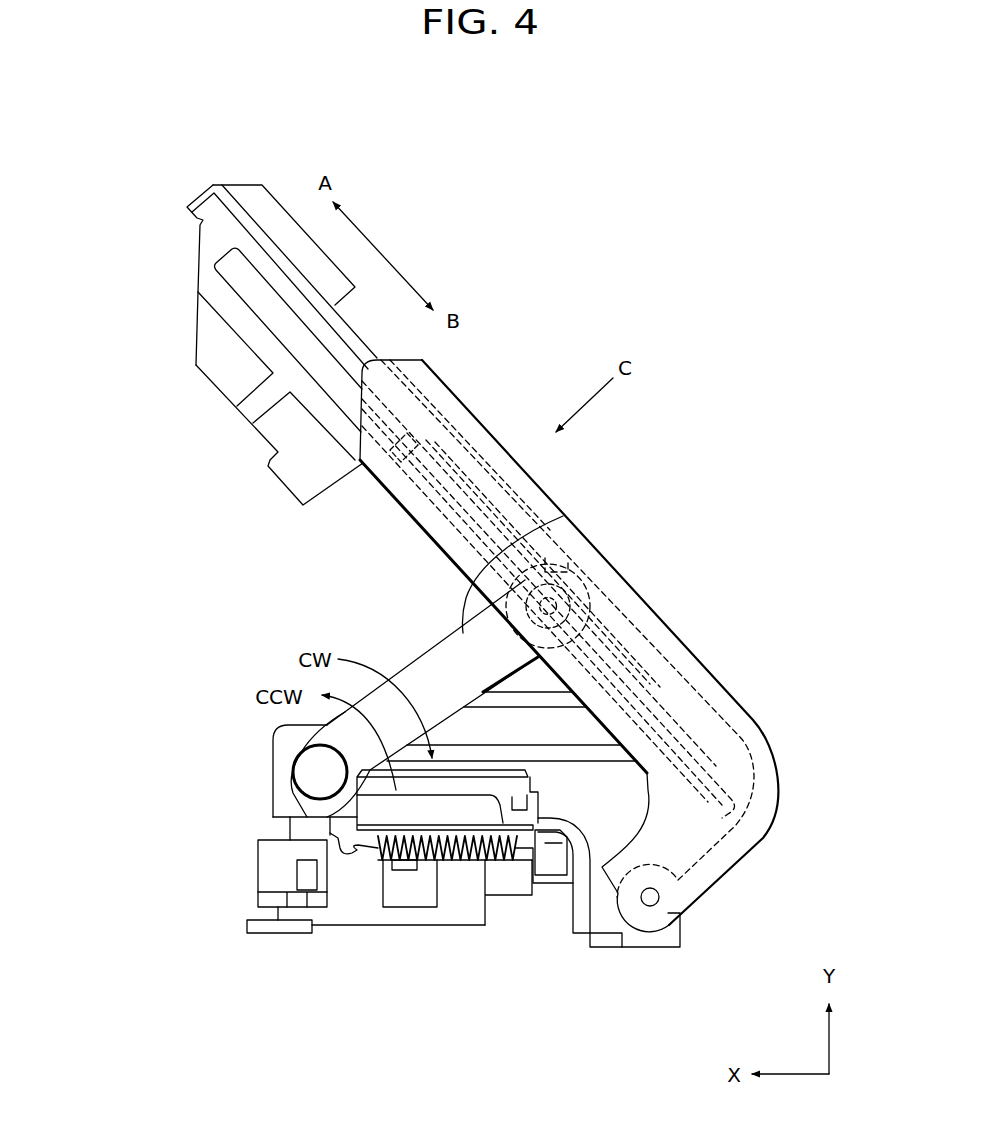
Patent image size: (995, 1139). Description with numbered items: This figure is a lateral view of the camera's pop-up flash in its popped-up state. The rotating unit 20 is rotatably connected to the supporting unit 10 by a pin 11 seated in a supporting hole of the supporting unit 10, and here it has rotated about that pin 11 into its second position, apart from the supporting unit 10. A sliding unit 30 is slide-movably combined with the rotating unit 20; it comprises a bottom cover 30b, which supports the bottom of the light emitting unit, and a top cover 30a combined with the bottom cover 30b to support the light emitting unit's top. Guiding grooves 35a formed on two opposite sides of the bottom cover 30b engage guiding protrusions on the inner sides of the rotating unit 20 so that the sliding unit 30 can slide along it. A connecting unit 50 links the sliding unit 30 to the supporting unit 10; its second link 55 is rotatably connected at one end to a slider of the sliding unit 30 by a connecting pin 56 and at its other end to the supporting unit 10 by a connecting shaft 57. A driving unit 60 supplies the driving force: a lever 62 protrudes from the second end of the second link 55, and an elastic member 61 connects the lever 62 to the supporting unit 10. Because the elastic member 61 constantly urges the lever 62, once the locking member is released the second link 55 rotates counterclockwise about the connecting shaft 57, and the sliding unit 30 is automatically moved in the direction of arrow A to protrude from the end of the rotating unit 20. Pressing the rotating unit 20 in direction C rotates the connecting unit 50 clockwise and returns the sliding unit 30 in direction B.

The supporting unit 10 is at (557, 930).
The pin 11 is at (650, 906).
The rotating unit 20 is at (740, 684).
The sliding unit 30 is at (110, 172).
The top cover 30a is at (248, 185).
The bottom cover 30b is at (205, 340).
The guiding grooves 35a is at (422, 453).
The connecting unit 50 is at (402, 641).
The second link 55 is at (563, 516).
The connecting pin 56 is at (562, 601).
The connecting shaft 57 is at (302, 771).
The driving unit 60 is at (358, 980).
The elastic member 61 is at (450, 860).
The lever 62 is at (347, 853).